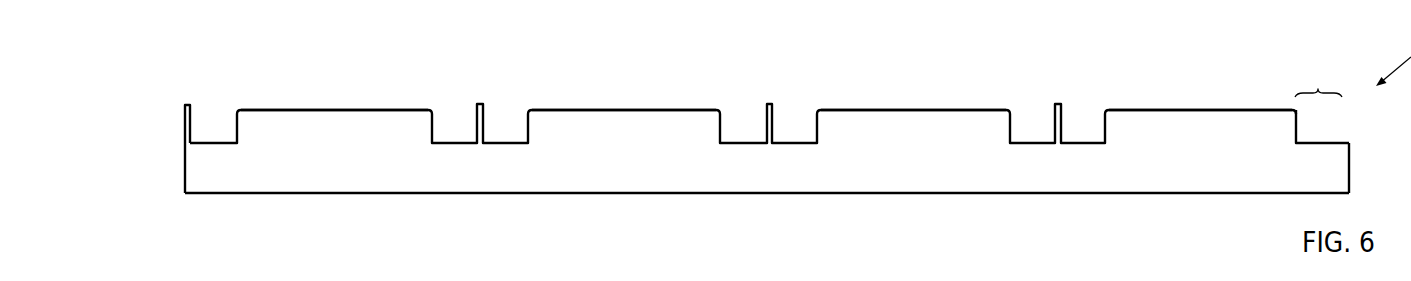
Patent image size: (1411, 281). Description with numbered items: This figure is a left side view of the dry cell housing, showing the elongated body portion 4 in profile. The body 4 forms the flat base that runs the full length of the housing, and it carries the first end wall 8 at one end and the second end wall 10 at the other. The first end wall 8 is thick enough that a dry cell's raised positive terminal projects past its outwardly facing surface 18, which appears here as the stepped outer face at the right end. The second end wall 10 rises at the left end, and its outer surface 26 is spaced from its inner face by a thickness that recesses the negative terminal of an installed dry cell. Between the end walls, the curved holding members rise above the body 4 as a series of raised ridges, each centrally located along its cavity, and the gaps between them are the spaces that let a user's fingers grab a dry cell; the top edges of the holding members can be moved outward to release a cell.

The body portion 4 is at (323, 178).
The first end wall 8 is at (1350, 175).
The second end wall 10 is at (185, 175).
The outwardly facing surface 18 is at (1350, 155).
The outer surface 26 is at (185, 130).